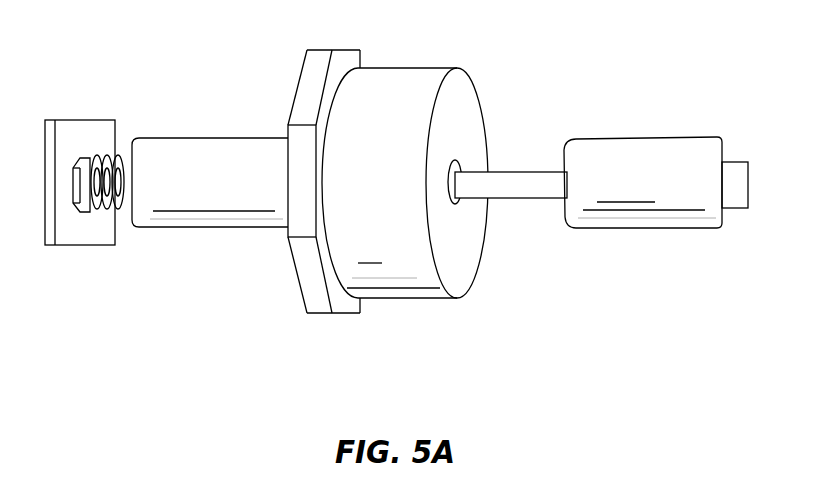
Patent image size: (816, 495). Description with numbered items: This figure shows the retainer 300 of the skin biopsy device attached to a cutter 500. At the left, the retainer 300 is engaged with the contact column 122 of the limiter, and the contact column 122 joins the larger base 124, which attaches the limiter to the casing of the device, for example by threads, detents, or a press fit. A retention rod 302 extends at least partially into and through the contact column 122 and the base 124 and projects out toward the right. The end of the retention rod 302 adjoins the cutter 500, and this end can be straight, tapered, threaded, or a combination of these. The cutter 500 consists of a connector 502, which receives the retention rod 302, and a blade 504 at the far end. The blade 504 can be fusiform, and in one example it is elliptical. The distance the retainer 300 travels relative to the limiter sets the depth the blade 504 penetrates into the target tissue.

The retainer 300 is at (108, 252).
The contact column 122 is at (206, 196).
The base 124 is at (398, 258).
The retention rod 302 is at (527, 199).
The connector 502 is at (652, 216).
The blade 504 is at (740, 208).
The cutter 500 is at (692, 366).